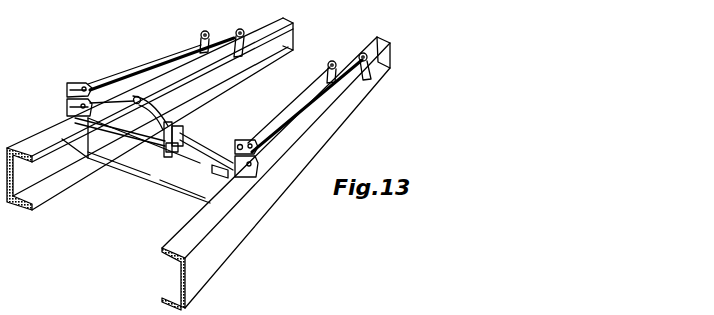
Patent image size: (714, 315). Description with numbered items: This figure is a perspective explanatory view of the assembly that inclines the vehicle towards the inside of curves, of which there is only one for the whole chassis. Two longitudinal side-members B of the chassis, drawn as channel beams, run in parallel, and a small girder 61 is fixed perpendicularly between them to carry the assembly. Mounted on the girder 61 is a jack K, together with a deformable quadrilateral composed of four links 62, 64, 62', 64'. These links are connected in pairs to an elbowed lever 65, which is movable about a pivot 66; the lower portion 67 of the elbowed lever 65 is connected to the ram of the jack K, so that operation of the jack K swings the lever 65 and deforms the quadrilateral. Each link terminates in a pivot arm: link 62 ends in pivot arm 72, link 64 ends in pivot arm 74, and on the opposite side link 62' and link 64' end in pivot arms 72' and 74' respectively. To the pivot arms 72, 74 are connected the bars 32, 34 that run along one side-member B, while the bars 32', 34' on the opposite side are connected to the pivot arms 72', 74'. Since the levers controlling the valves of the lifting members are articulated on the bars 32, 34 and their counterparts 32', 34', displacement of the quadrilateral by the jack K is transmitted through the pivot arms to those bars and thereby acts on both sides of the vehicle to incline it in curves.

The longitudinal side-members B is at (35, 170).
The jack K is at (218, 174).
The bar 32 is at (167, 59).
The bar 34 is at (148, 57).
The bar 32' is at (317, 102).
The bar 34' is at (292, 102).
The small girder 61 is at (127, 164).
The link 62 is at (119, 177).
The link 62' is at (178, 190).
The link 64 is at (109, 73).
The link 64' is at (252, 129).
The elbowed lever 65 is at (168, 106).
The pivot of elbowed lever 66 is at (186, 127).
The lower portion of elbowed lever 67 is at (170, 155).
The pivot arm 72 is at (78, 108).
The pivot arm 72' is at (277, 189).
The pivot arm 74 is at (59, 86).
The pivot arm 74' is at (261, 132).